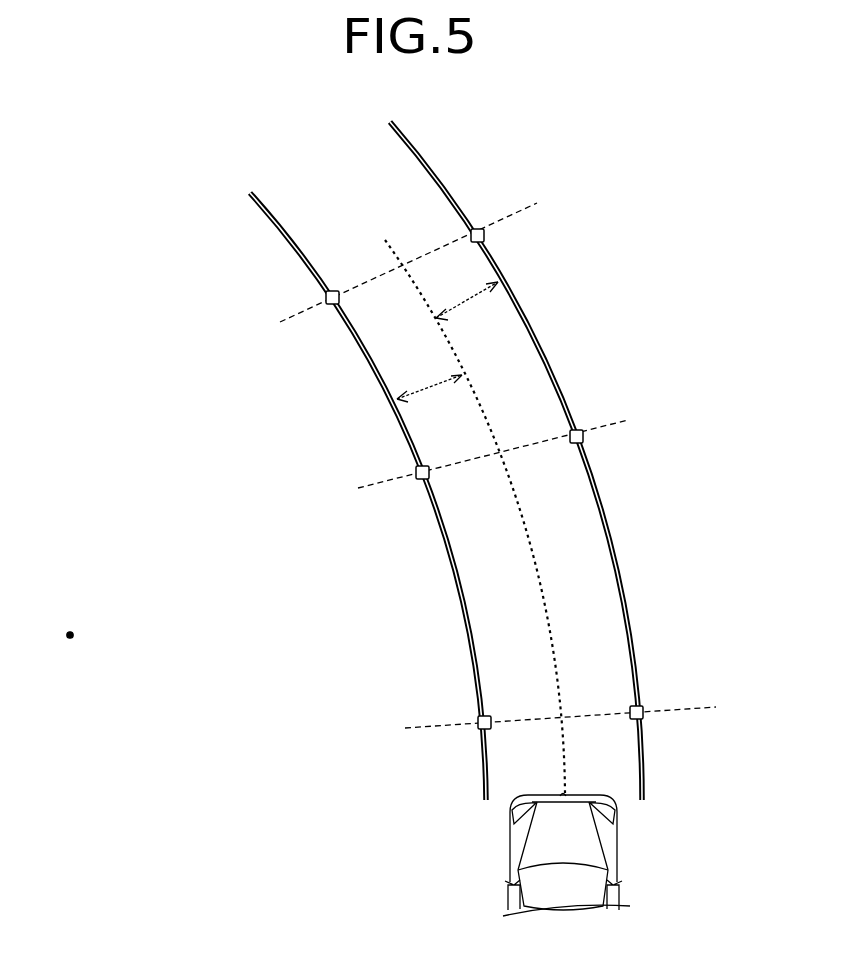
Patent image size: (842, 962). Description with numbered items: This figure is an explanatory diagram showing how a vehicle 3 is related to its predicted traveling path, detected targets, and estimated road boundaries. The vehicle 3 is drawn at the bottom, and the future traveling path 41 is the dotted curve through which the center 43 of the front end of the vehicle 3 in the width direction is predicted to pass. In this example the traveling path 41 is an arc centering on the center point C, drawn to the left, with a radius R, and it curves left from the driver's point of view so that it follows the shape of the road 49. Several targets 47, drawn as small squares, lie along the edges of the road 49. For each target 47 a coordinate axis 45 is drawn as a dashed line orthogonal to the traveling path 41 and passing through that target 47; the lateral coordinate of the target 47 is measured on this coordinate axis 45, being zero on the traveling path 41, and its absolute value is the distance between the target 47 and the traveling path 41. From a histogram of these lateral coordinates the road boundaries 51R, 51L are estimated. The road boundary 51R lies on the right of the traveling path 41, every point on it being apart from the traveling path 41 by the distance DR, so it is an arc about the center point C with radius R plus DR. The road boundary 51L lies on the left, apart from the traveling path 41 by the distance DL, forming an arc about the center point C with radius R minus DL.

The vehicle 3 is at (618, 862).
The traveling path 41 is at (538, 548).
The center of the front end of the vehicle 43 is at (566, 793).
The coordinate axis 45 is at (298, 322).
The target 47 is at (330, 308).
The road 49 is at (448, 447).
The left road boundary 51L is at (383, 386).
The right road boundary 51R is at (548, 335).
The center point C is at (70, 639).
The distance DR is at (467, 308).
The distance DL is at (429, 399).